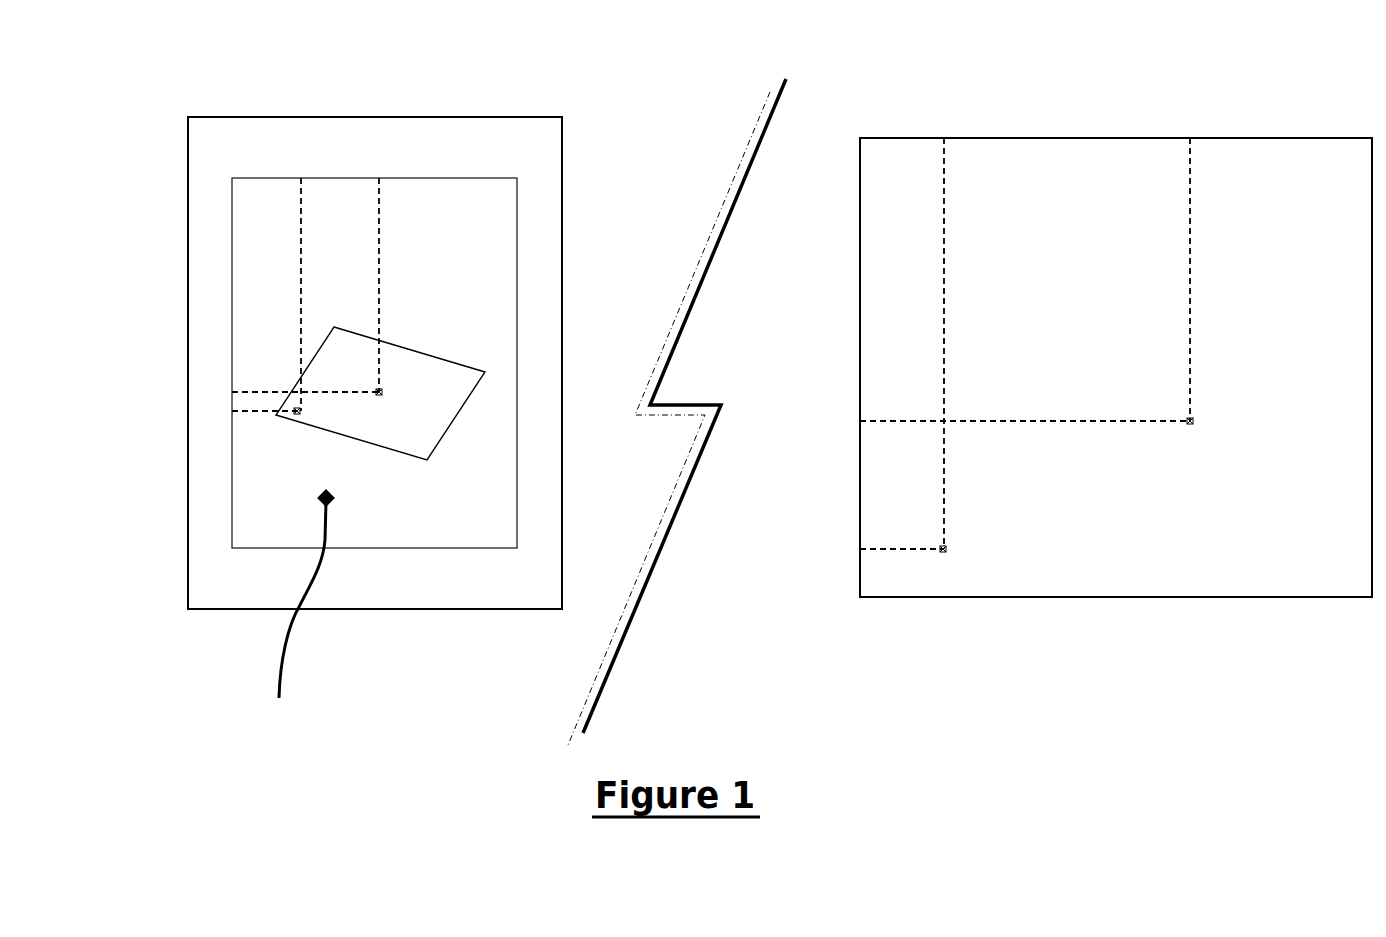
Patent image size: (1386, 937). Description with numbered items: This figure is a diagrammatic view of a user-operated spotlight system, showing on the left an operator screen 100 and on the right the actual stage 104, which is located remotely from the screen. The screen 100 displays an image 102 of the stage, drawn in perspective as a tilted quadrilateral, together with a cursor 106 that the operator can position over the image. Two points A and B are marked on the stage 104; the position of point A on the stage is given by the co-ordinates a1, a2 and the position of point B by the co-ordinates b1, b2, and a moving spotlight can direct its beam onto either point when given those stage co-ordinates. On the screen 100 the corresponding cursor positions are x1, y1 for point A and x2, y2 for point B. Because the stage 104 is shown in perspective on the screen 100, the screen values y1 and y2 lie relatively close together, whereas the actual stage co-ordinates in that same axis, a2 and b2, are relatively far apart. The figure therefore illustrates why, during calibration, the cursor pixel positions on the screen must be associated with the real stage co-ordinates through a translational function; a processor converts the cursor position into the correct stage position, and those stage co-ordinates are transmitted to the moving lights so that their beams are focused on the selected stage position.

The operator screen 100 is at (259, 562).
The image of a stage 102 is at (402, 442).
The stage 104 is at (1043, 539).
The cursor 106 is at (298, 608).
The cursor position co-ordinate x1 is at (301, 178).
The cursor position co-ordinate x2 is at (379, 178).
The cursor position co-ordinate y1 is at (250, 417).
The cursor position co-ordinate y2 is at (282, 392).
The stage position co-ordinate a1 is at (944, 200).
The stage position co-ordinate a2 is at (913, 549).
The stage position co-ordinate b1 is at (1190, 165).
The stage position co-ordinate b2 is at (903, 420).
The point on the stage A is at (630, 477).
The point on the stage B is at (795, 414).